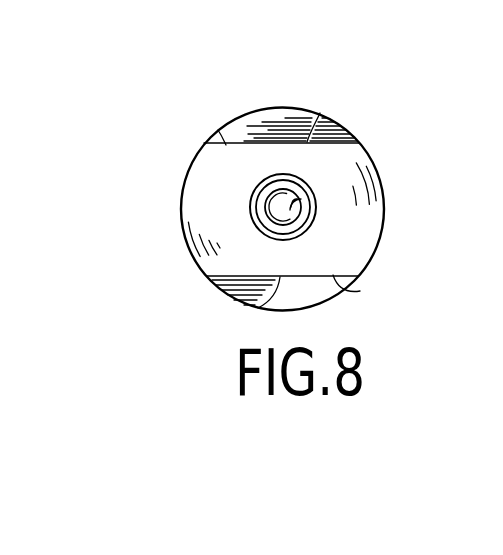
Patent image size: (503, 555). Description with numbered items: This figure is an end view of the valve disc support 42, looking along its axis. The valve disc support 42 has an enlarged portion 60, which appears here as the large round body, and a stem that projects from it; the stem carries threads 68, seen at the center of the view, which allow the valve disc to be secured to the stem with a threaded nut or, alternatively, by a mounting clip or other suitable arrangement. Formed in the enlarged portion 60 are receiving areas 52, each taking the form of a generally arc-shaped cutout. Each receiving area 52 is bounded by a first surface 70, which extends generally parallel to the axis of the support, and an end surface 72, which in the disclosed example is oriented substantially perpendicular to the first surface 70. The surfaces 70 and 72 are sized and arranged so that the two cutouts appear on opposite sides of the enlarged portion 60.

The valve disc support 42 is at (183, 236).
The receiving areas 52 is at (320, 113).
The enlarged portion 60 is at (181, 215).
The threads 68 is at (258, 233).
The first surface 70 is at (218, 130).
The end surface 72 is at (253, 127).